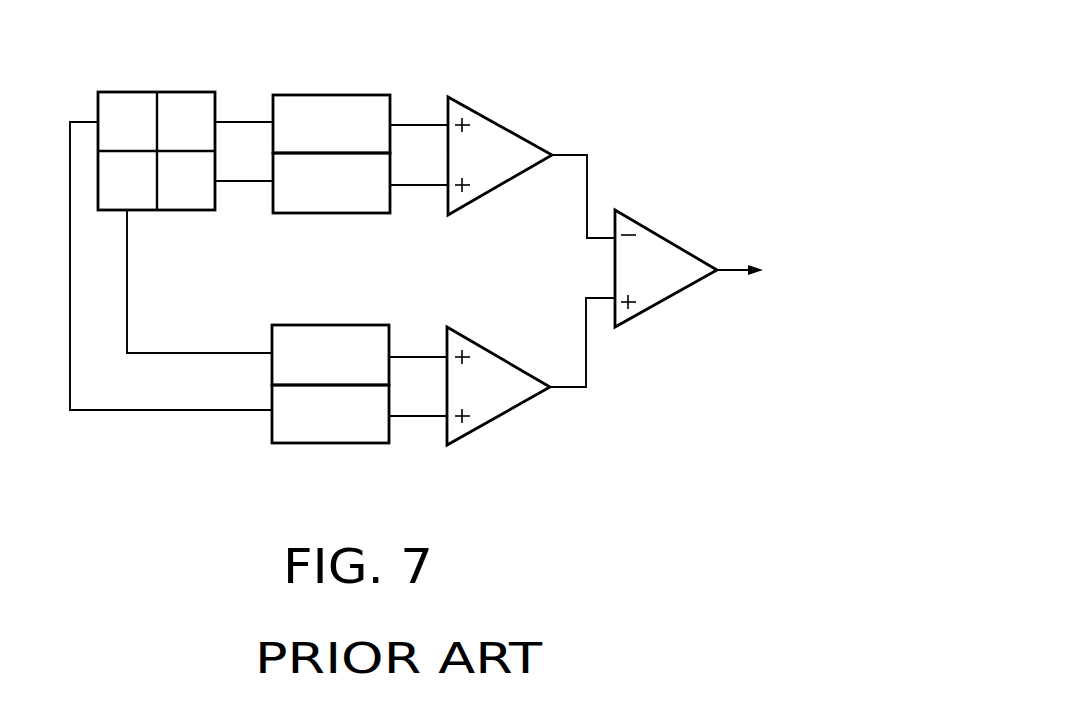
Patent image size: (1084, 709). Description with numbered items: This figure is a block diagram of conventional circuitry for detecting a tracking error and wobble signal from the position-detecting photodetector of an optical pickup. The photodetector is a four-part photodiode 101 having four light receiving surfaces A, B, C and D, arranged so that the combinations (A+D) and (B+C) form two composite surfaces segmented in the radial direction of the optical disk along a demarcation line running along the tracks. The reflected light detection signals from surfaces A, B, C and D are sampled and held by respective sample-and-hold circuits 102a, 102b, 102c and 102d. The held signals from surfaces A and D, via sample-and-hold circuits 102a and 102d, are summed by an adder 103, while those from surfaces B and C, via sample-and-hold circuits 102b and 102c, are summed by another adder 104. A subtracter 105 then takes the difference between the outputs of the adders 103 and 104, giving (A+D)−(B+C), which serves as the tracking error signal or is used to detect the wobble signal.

The four-part photodiode 101 is at (170, 92).
The sample-and-hold circuit 102a is at (337, 443).
The sample-and-hold circuit 102b is at (365, 95).
The sample-and-hold circuit 102c is at (340, 213).
The sample-and-hold circuit 102d is at (360, 325).
The adder 103 is at (500, 353).
The adder 104 is at (500, 121).
The subtracter 105 is at (675, 240).